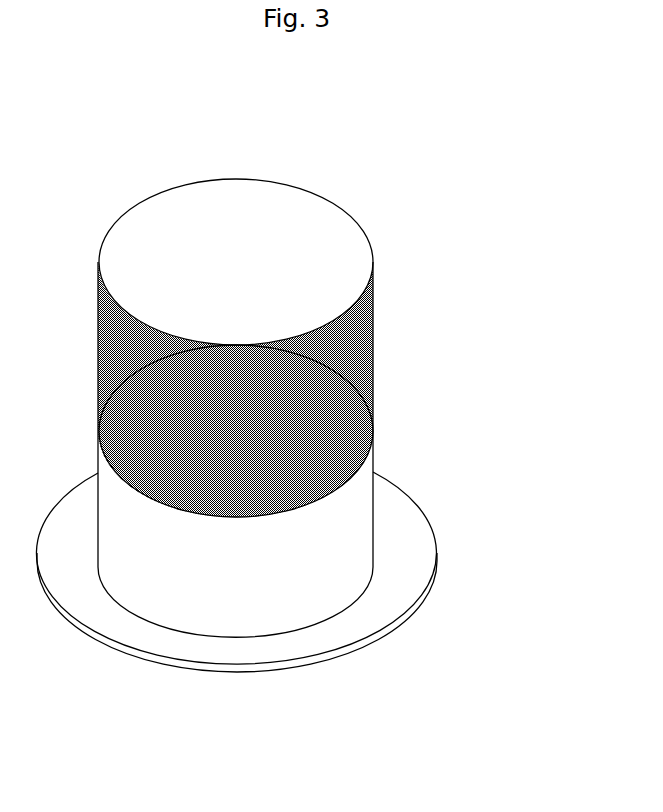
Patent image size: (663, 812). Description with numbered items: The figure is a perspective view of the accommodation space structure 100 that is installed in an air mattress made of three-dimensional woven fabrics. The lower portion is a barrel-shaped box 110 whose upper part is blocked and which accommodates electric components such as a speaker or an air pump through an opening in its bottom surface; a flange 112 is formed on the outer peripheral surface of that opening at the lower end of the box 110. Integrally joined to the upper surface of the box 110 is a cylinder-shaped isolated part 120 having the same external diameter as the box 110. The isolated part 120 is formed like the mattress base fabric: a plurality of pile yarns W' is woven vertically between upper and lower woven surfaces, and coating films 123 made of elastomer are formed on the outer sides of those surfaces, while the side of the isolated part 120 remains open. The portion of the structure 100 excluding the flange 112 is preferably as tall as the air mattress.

The structure 100 is at (367, 147).
The box 110 is at (358, 498).
The flange 112 is at (415, 580).
The isolated part 120 is at (325, 348).
The coating film 123 is at (368, 262).
The pile yarn W' is at (283, 346).